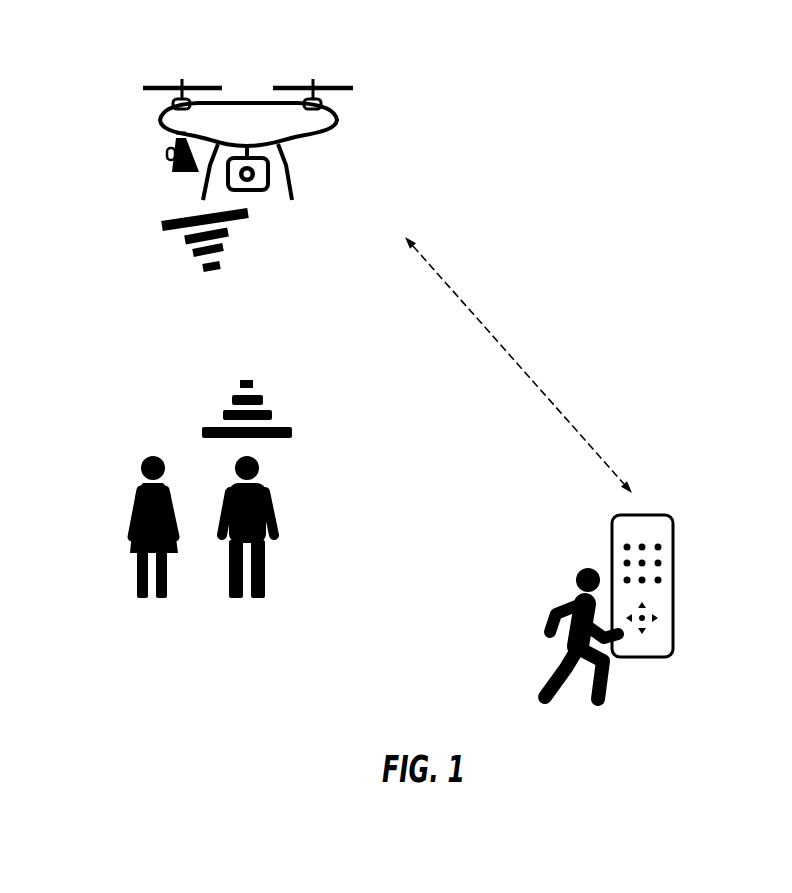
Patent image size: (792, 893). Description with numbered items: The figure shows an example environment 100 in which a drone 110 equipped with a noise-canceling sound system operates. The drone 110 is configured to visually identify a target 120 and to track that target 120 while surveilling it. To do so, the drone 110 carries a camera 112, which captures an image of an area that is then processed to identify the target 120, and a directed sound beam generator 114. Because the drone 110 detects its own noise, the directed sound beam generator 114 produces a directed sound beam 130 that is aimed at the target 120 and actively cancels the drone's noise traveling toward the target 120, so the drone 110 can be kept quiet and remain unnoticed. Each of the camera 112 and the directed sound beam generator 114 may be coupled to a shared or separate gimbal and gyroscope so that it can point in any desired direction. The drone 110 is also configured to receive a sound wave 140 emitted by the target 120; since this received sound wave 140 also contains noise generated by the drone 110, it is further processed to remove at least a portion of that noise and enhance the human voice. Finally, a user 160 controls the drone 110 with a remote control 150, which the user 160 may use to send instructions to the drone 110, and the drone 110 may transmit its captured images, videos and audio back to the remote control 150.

The environment 100 is at (442, 38).
The drone 110 is at (320, 138).
The camera 112 is at (270, 178).
The directed sound beam generator 114 is at (160, 157).
The target 120 is at (282, 530).
The directed sound beam 130 is at (237, 235).
The sound wave 140 is at (292, 408).
The remote control 150 is at (675, 557).
The user 160 is at (610, 698).